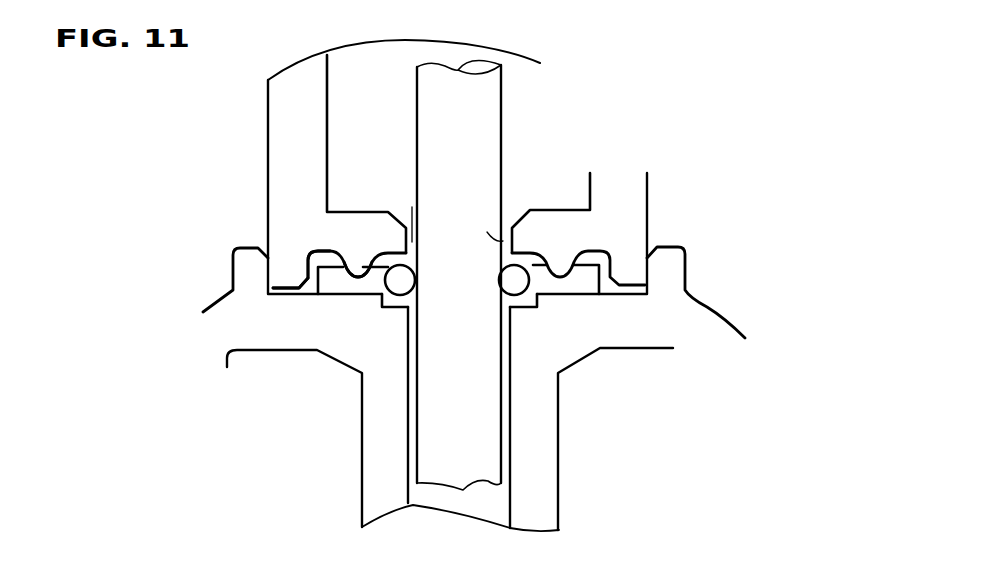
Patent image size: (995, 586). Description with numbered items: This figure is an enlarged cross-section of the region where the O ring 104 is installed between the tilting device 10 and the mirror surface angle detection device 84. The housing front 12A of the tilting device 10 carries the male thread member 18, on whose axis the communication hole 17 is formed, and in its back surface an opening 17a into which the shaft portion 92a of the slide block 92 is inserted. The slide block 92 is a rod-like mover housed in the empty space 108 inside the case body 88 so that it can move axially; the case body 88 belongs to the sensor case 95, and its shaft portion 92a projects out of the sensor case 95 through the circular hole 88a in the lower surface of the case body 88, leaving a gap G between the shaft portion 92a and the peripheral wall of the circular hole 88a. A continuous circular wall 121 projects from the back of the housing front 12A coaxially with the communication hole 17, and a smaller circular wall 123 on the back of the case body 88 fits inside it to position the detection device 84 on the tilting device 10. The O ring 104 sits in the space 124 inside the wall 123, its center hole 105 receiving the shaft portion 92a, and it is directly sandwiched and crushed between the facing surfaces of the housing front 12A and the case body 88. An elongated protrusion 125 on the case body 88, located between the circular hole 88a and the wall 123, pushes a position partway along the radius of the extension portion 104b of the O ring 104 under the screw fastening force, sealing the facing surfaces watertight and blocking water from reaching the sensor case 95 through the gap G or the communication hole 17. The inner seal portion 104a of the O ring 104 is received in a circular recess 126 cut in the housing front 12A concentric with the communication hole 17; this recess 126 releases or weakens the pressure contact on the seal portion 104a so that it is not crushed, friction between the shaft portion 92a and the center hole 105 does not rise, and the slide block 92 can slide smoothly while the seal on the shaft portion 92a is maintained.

The tilting device 10 is at (848, 428).
The housing front 12A is at (707, 328).
The communication hole 17 is at (510, 497).
The opening 17a is at (535, 287).
The male thread member 18 is at (540, 448).
The mirror surface angle detection device 84 is at (793, 107).
The case body 88 is at (623, 193).
The circular hole 88a is at (490, 238).
The slide block 92 is at (473, 128).
The shaft portion 92a is at (452, 458).
The sensor case 95 is at (662, 198).
The O ring 104 is at (595, 257).
The seal portion 104a is at (398, 298).
The extension portion 104b is at (333, 297).
The center hole 105 is at (450, 255).
The empty space 108 is at (360, 128).
The wall 121 is at (250, 273).
The wall 123 is at (285, 266).
The space 124 is at (310, 288).
The elongated protrusion 125 is at (353, 262).
The recess 126 is at (523, 285).
The gap G is at (412, 222).